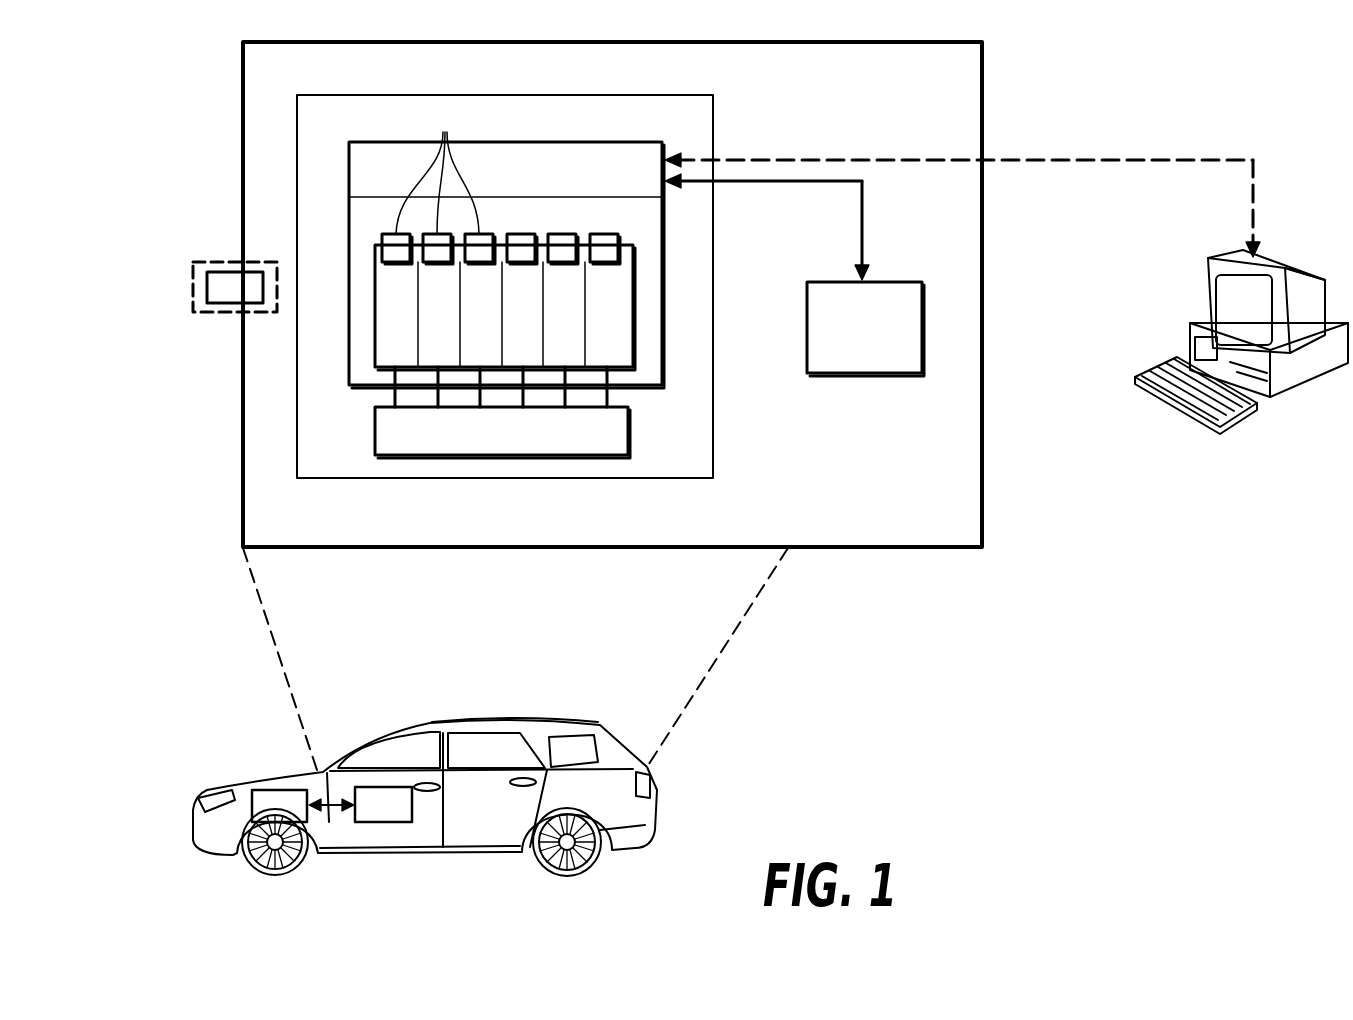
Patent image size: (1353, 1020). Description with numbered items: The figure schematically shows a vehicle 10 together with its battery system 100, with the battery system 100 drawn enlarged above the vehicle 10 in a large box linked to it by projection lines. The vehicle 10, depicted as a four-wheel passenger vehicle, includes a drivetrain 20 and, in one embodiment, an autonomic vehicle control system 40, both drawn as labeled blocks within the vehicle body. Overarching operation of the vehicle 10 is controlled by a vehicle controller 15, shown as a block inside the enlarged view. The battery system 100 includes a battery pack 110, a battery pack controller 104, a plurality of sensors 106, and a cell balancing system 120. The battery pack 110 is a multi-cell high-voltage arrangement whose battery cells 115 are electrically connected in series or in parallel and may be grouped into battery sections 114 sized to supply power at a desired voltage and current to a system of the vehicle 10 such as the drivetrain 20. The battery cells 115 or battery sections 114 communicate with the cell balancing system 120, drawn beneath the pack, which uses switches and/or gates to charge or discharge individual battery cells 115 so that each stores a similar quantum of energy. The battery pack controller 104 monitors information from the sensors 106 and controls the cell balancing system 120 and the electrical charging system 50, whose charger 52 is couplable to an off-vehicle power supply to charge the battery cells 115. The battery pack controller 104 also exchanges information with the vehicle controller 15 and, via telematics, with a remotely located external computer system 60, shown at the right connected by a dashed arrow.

The vehicle 10 is at (212, 765).
The vehicle controller 15 is at (879, 339).
The drivetrain 20 is at (294, 820).
The autonomic vehicle control system 40 is at (400, 820).
The electrical charging system 50 is at (215, 235).
The charger 52 is at (207, 287).
The external computer system 60 is at (1172, 405).
The battery system 100 is at (357, 131).
The battery pack controller 104 is at (527, 182).
The sensors 106 is at (437, 168).
The battery pack 110 is at (527, 228).
The battery sections 114 is at (440, 318).
The battery cells 115 is at (483, 340).
The cell balancing system 120 is at (524, 444).